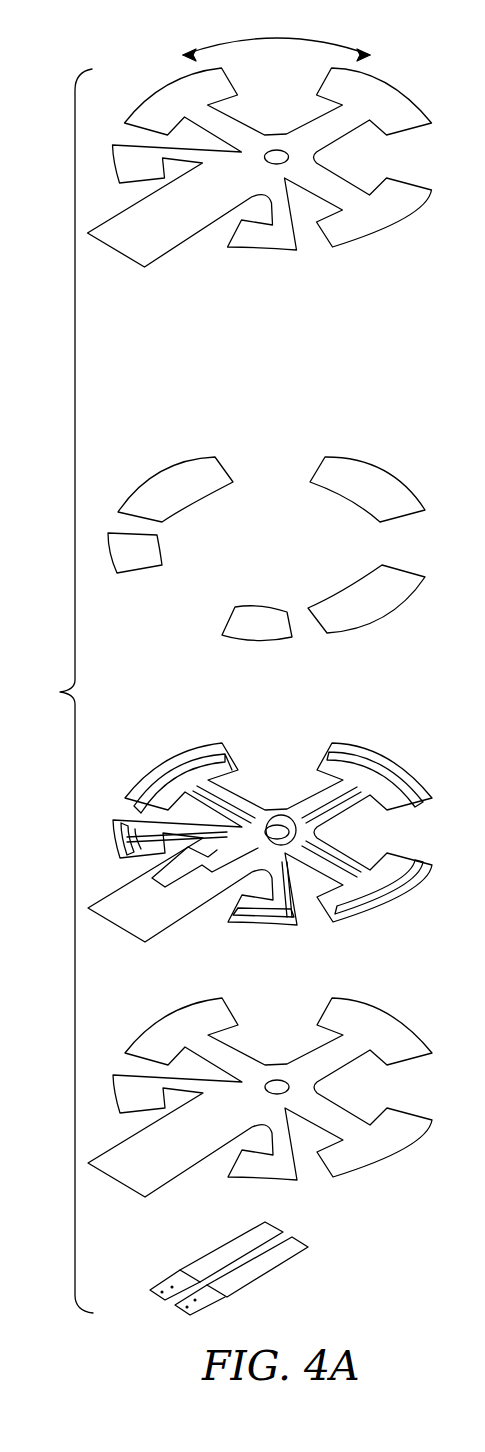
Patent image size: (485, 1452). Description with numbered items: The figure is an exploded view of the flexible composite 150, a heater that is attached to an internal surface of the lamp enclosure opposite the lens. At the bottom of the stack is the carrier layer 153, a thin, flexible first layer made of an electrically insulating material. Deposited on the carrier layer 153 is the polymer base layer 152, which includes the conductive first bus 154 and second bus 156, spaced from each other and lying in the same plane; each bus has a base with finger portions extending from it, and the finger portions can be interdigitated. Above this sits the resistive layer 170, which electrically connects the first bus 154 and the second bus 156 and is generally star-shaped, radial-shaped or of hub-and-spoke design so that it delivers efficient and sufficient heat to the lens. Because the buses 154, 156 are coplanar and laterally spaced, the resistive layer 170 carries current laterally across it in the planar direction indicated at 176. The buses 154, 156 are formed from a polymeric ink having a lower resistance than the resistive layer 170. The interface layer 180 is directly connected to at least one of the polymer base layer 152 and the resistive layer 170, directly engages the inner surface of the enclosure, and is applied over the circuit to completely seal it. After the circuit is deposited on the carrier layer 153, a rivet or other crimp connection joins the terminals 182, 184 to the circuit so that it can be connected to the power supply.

The flexible composite 150 is at (247, 691).
The polymer base layer 152 is at (363, 750).
The carrier layer 153 is at (393, 1019).
The first bus 154 is at (225, 795).
The second bus 156 is at (220, 744).
The resistive layer 170 is at (380, 473).
The planar direction of current flow 176 is at (277, 37).
The interface layer 180 is at (380, 83).
The terminal 182 is at (265, 1230).
The terminal 184 is at (290, 1240).